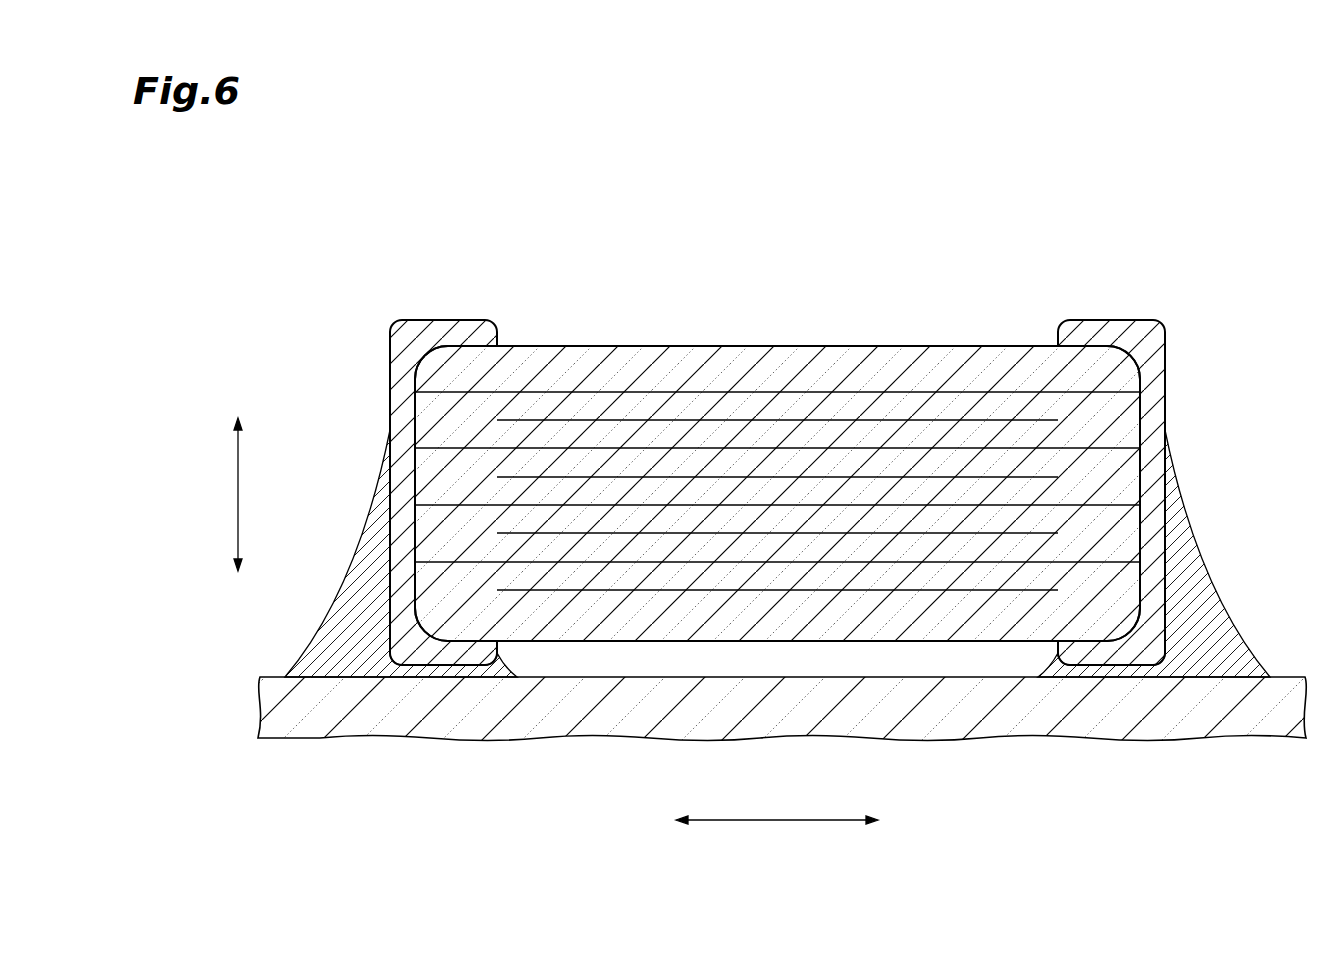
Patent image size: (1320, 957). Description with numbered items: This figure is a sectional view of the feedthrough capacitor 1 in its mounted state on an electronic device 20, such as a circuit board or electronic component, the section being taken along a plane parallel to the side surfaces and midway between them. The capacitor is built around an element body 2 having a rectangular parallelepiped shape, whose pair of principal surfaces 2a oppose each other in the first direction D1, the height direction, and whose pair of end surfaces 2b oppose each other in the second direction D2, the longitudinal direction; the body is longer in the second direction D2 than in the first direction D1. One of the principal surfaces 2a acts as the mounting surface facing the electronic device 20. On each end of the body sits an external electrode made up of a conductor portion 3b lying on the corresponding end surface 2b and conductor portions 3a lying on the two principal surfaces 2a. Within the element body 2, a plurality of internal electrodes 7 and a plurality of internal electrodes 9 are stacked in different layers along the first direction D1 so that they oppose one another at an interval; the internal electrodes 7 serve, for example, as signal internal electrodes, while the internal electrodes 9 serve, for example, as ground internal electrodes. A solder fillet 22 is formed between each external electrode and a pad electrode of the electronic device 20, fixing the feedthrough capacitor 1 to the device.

The feedthrough capacitor 1 is at (779, 467).
The element body 2 is at (903, 345).
The principal surface 2a is at (793, 346).
The end surface 2b is at (415, 470).
The conductor portion 3a is at (453, 320).
The conductor portion 3b is at (390, 386).
The internal electrode 7 is at (972, 392).
The internal electrode 9 is at (583, 420).
The electronic device 20 is at (305, 739).
The solder fillet 22 is at (355, 596).
The first direction D1 is at (236, 493).
The second direction D2 is at (777, 822).